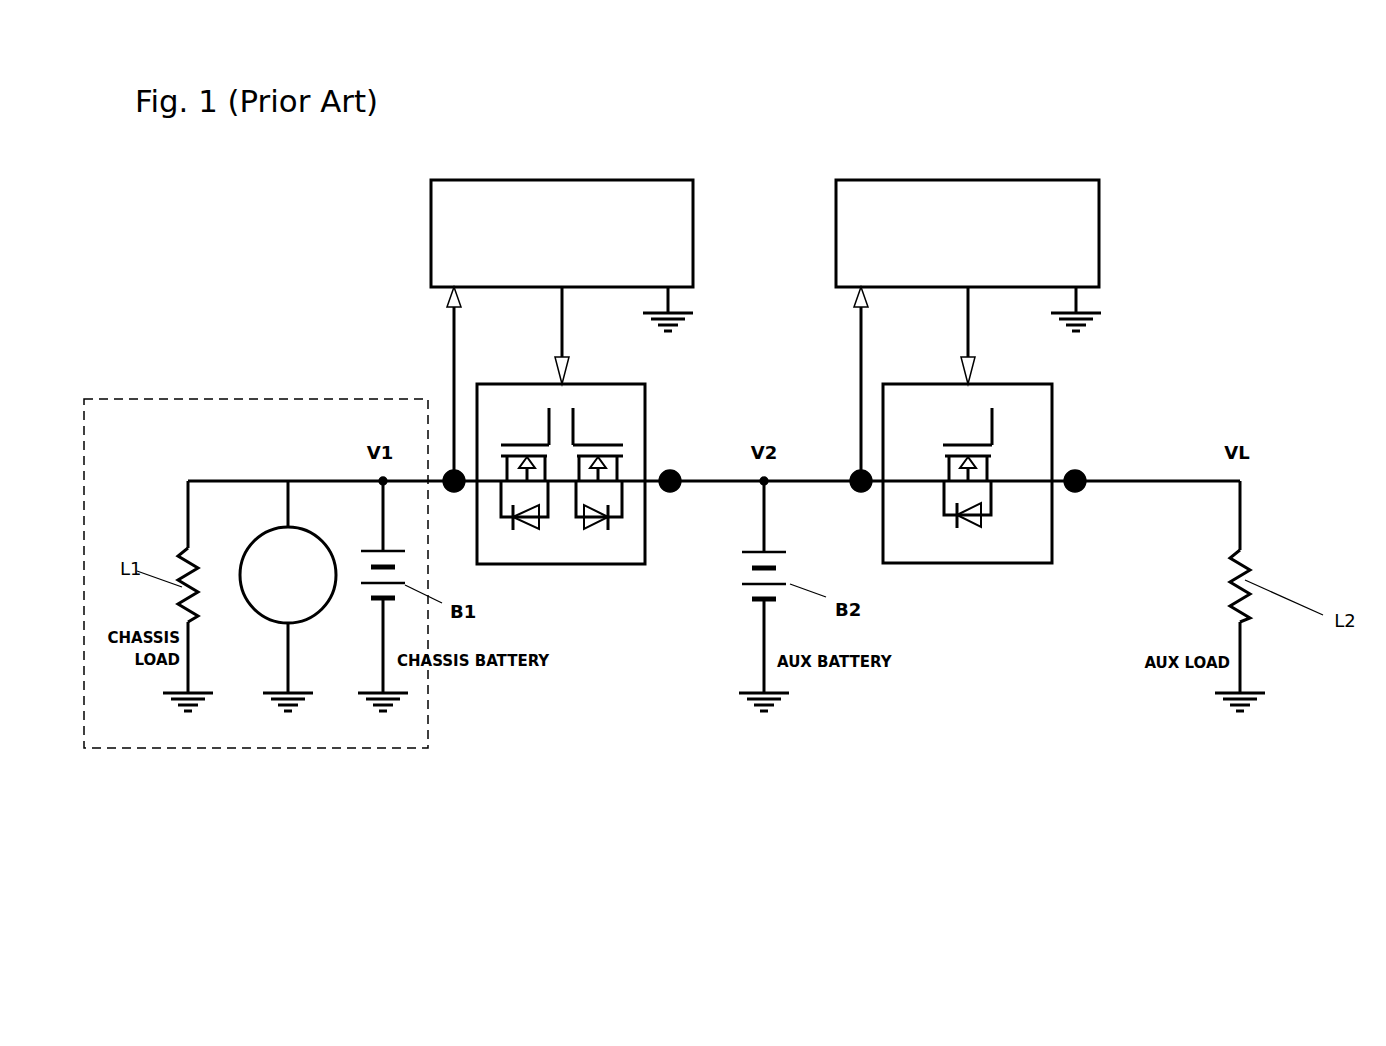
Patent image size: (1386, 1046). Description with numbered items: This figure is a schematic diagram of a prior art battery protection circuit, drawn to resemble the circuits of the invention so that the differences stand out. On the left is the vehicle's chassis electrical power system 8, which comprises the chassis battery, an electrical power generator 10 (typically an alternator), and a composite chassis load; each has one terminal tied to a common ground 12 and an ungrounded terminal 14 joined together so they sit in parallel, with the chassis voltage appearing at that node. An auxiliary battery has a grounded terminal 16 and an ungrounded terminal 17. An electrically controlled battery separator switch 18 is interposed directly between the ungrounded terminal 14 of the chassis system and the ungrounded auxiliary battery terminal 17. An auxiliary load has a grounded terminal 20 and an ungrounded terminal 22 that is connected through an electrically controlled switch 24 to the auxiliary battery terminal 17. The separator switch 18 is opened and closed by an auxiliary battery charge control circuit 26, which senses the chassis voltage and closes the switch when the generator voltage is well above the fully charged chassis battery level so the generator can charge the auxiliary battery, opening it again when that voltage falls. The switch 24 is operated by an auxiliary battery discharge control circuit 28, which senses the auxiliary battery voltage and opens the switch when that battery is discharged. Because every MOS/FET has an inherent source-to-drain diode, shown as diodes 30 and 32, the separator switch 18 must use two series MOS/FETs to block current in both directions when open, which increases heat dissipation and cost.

The chassis electrical power system 8 is at (160, 398).
The electrical power generator 10 is at (263, 608).
The common ground 12 is at (293, 712).
The ungrounded terminal 14 is at (270, 481).
The grounded terminal 16 is at (762, 651).
The ungrounded terminal 17 is at (768, 522).
The electrically controlled battery separator switch 18 is at (604, 512).
The grounded terminal 20 is at (1244, 651).
The ungrounded terminal 22 is at (1244, 530).
The electrically controlled switch 24 is at (1035, 432).
The auxiliary battery charge control circuit 26 is at (643, 193).
The auxiliary battery discharge control circuit 28 is at (1072, 207).
The inherent diode 30 is at (527, 527).
The inherent diode 32 is at (595, 527).